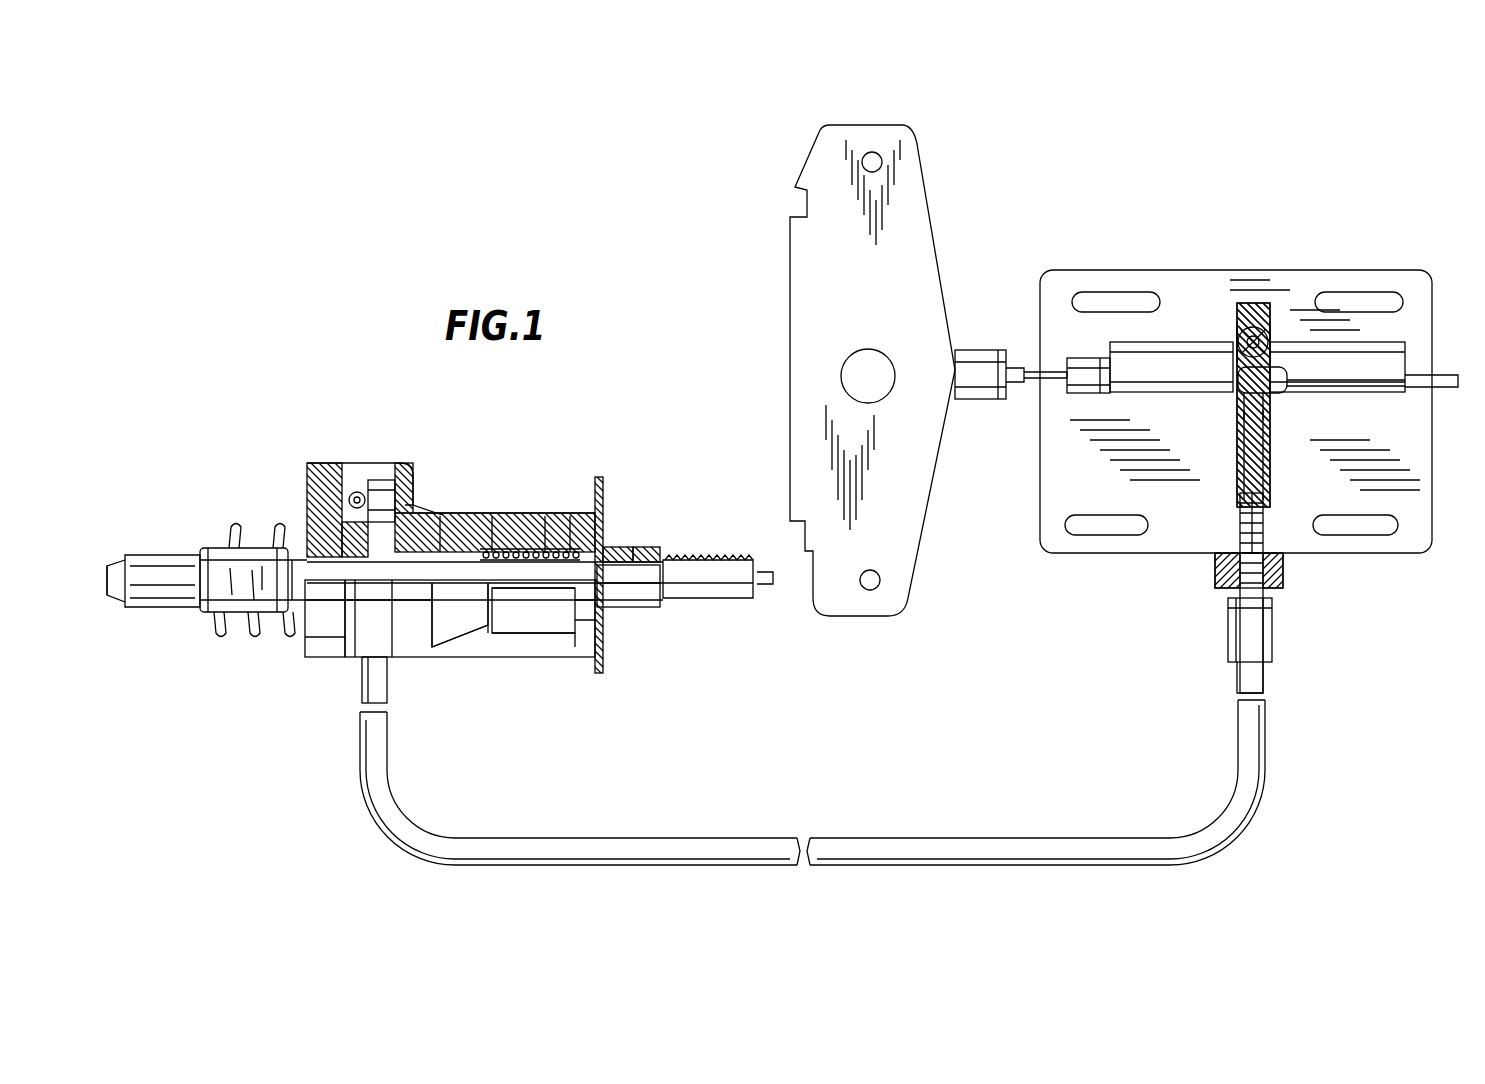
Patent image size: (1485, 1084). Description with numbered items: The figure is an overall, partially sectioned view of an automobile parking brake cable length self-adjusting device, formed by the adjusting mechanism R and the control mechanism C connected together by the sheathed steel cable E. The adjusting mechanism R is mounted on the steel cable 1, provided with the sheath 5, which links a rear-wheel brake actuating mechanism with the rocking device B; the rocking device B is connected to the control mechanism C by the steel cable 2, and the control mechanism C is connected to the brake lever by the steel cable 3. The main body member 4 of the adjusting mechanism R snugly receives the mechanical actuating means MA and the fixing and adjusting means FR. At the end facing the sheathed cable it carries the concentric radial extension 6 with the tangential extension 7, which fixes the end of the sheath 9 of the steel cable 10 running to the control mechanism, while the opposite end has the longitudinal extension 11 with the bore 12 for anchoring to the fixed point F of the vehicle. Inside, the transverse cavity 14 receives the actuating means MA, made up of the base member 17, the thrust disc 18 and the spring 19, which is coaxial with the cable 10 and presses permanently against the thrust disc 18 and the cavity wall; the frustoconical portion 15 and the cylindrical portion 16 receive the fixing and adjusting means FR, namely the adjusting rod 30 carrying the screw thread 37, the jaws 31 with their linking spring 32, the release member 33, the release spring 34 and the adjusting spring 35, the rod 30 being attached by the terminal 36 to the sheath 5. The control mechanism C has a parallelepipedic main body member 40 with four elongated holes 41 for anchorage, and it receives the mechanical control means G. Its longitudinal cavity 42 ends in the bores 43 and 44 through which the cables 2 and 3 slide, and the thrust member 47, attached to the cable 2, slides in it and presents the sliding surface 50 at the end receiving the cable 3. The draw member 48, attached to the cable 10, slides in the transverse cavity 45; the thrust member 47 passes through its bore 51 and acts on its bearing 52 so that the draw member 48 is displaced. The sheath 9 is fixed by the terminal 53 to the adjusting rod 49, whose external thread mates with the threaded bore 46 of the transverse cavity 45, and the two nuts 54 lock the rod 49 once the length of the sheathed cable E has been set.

The steel cable 1 is at (118, 597).
The steel cable 2 is at (1025, 371).
The steel cable 3 is at (1440, 387).
The main body member 4 is at (555, 648).
The sheath 5 is at (210, 556).
The concentric radial extension 6 is at (408, 470).
The tangential extension 7 is at (390, 665).
The sheath 9 is at (388, 730).
The steel cable 10 is at (365, 498).
The longitudinal extension 11 is at (612, 548).
The bore 12 is at (640, 548).
The transverse cavity 14 is at (418, 500).
The frustoconical portion 15 is at (442, 535).
The cylindrical portion 16 is at (518, 548).
The base member 17 is at (312, 485).
The thrust disc 18 is at (348, 600).
The spring 19 is at (358, 492).
The adjusting rod 30 is at (712, 598).
The jaws 31 is at (493, 530).
The linking spring 32 is at (432, 648).
The release member 33 is at (490, 650).
The release spring 34 is at (550, 548).
The adjusting spring 35 is at (224, 630).
The terminal 36 is at (238, 590).
The screw thread 37 is at (737, 558).
The main body member 40 is at (1230, 275).
The elongated holes 41 is at (1115, 292).
The longitudinal cavity 42 is at (1335, 345).
The bore 43 is at (1065, 378).
The bore 44 is at (1425, 365).
The transverse cavity 45 is at (1268, 480).
The bore 46 is at (1236, 528).
The thrust member 47 is at (1190, 345).
The draw member 48 is at (1262, 340).
The adjusting rod 49 is at (1263, 528).
The sliding surface 50 is at (1240, 395).
The bore 51 is at (1265, 432).
The bearing 52 is at (1253, 327).
The terminal 53 is at (1250, 640).
The nuts 54 is at (1270, 590).
The rocking device B is at (779, 362).
The control mechanism C is at (1162, 245).
The sheathed steel cable E is at (919, 820).
The fixed point F is at (615, 645).
The fixing and adjusting means FR is at (478, 500).
The mechanical control means G is at (1222, 410).
The mechanical actuating means MA is at (299, 502).
The adjusting mechanism R is at (345, 444).